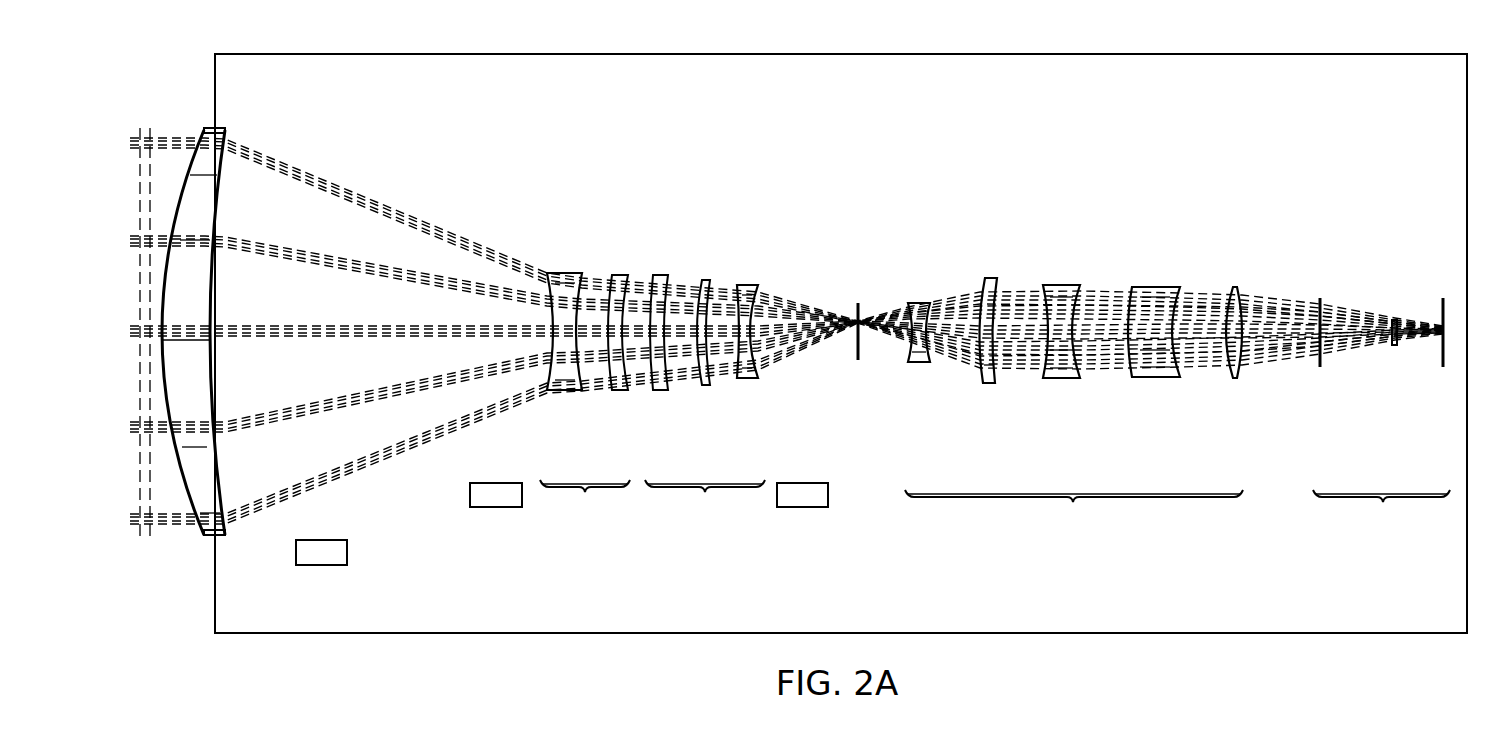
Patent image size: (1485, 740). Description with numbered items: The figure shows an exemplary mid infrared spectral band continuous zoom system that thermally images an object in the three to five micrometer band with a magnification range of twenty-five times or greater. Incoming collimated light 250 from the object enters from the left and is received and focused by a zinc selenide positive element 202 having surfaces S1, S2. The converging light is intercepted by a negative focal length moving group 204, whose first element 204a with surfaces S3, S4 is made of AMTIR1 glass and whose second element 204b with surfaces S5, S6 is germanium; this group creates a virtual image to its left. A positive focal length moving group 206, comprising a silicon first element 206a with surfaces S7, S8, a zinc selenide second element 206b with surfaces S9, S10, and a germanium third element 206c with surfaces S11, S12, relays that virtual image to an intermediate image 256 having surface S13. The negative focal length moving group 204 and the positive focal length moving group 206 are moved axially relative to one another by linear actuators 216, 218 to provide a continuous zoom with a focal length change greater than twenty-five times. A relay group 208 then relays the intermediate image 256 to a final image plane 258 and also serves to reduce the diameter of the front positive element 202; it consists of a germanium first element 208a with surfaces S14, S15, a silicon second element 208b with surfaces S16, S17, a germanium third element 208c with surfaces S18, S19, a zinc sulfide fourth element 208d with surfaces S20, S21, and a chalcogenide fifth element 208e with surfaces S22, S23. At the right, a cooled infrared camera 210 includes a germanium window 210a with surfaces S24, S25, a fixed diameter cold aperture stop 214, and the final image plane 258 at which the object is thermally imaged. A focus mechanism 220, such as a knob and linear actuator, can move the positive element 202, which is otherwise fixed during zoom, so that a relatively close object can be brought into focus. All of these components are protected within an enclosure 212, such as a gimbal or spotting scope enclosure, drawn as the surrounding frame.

The positive element 202 is at (211, 128).
The negative focal length moving group 204 is at (585, 504).
The first element 204a is at (560, 270).
The second element 204b is at (618, 394).
The positive focal length moving group 206 is at (705, 504).
The first element 206a is at (662, 272).
The second element 206b is at (706, 390).
The third element 206c is at (746, 282).
The relay group 208 is at (1074, 517).
The first element 208a is at (919, 301).
The second element 208b is at (990, 276).
The third element 208c is at (1062, 283).
The fourth element 208d is at (1155, 285).
The fifth element 208e is at (1238, 286).
The cooled infrared camera 210 is at (1381, 517).
The window 210a is at (1323, 296).
The enclosure 212 is at (545, 636).
The fixed diameter cold aperture stop 214 is at (1396, 318).
The linear actuator 216 is at (496, 508).
The linear actuator 218 is at (803, 508).
The focus mechanism 220 is at (322, 566).
The incoming light 250 is at (142, 127).
The intermediate image 256 is at (855, 301).
The final image plane 258 is at (1445, 297).
The surface S1 is at (180, 487).
The surface S2 is at (232, 487).
The surface S3 is at (548, 343).
The surface S4 is at (582, 368).
The surface S5 is at (608, 284).
The surface S6 is at (626, 279).
The surface S7 is at (654, 380).
The surface S8 is at (679, 280).
The surface S9 is at (698, 282).
The surface S10 is at (712, 383).
The surface S11 is at (724, 295).
The surface S12 is at (758, 372).
The surface S13 is at (862, 318).
The surface S14 is at (905, 350).
The surface S15 is at (929, 364).
The surface S16 is at (982, 380).
The surface S17 is at (997, 386).
The surface S18 is at (1047, 382).
The surface S19 is at (1078, 383).
The surface S20 is at (1133, 382).
The surface S21 is at (1178, 382).
The surface S22 is at (1230, 382).
The surface S23 is at (1244, 382).
The surface S24 is at (1317, 364).
The surface S25 is at (1323, 360).